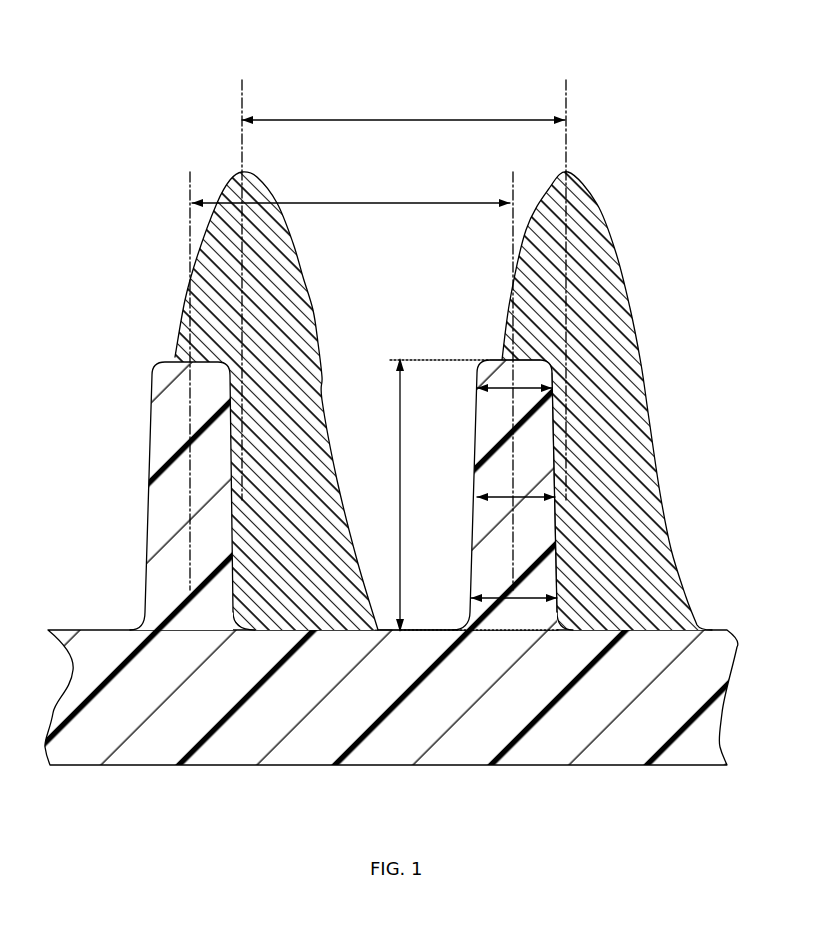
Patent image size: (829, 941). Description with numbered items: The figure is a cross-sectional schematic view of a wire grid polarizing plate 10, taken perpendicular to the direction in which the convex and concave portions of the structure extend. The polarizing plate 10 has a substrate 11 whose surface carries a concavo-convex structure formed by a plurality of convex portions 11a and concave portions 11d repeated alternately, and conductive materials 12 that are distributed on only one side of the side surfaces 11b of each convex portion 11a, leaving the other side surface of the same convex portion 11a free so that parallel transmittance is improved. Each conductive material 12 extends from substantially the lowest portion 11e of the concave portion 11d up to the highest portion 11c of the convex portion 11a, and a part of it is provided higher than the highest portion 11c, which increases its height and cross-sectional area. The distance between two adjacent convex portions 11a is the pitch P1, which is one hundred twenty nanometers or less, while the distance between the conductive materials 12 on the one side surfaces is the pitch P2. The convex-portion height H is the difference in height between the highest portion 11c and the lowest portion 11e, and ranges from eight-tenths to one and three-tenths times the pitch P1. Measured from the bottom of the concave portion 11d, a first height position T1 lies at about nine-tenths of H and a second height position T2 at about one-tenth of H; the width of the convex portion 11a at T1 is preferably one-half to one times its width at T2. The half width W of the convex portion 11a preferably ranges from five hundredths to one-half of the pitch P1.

The wire grid polarizing plate 10 is at (421, 393).
The substrate 11 is at (738, 689).
The convex portion 11a is at (165, 498).
The side surface 11b is at (556, 409).
The highest portion 11c is at (504, 358).
The concave portion 11d is at (358, 404).
The lowest portion 11e is at (385, 626).
The conductive material 12 is at (305, 322).
The pitch P1 is at (332, 204).
The pitch P2 is at (377, 121).
The first height position T1 is at (477, 388).
The second height position T2 is at (471, 598).
The half width W is at (495, 500).
The convex-portion height H is at (399, 487).